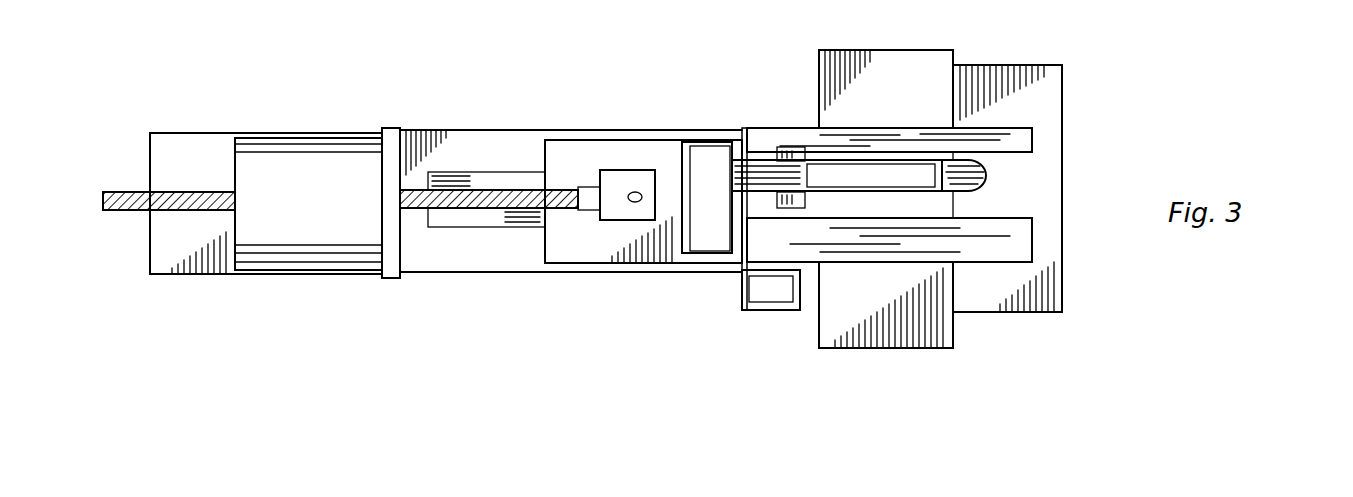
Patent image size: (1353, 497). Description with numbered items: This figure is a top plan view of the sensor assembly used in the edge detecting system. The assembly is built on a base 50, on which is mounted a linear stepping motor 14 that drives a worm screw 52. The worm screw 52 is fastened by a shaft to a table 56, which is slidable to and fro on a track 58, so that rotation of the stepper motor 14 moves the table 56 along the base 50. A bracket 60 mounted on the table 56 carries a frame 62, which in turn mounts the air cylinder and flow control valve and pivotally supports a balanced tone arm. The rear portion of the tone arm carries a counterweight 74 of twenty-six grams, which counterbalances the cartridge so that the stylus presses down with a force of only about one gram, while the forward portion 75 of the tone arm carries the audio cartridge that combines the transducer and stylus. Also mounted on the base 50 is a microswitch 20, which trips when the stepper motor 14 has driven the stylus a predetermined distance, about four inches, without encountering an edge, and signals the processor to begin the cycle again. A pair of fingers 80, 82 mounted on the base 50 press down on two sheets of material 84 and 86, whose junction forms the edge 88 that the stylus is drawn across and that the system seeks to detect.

The base 50 is at (193, 132).
The stepper motor 14 is at (315, 160).
The worm screw 52 is at (467, 188).
The track 58 is at (505, 217).
The table 56 is at (555, 245).
The bracket 60 is at (708, 155).
The frame 62 is at (772, 177).
The counterweight 74 is at (788, 208).
The microswitch 20 is at (772, 296).
The sheet of material 84 is at (872, 50).
The sheet of material 86 is at (982, 65).
The finger 82 is at (1027, 135).
The forward portion 75 is at (985, 174).
The finger 80 is at (1017, 242).
The edge 88 is at (955, 297).